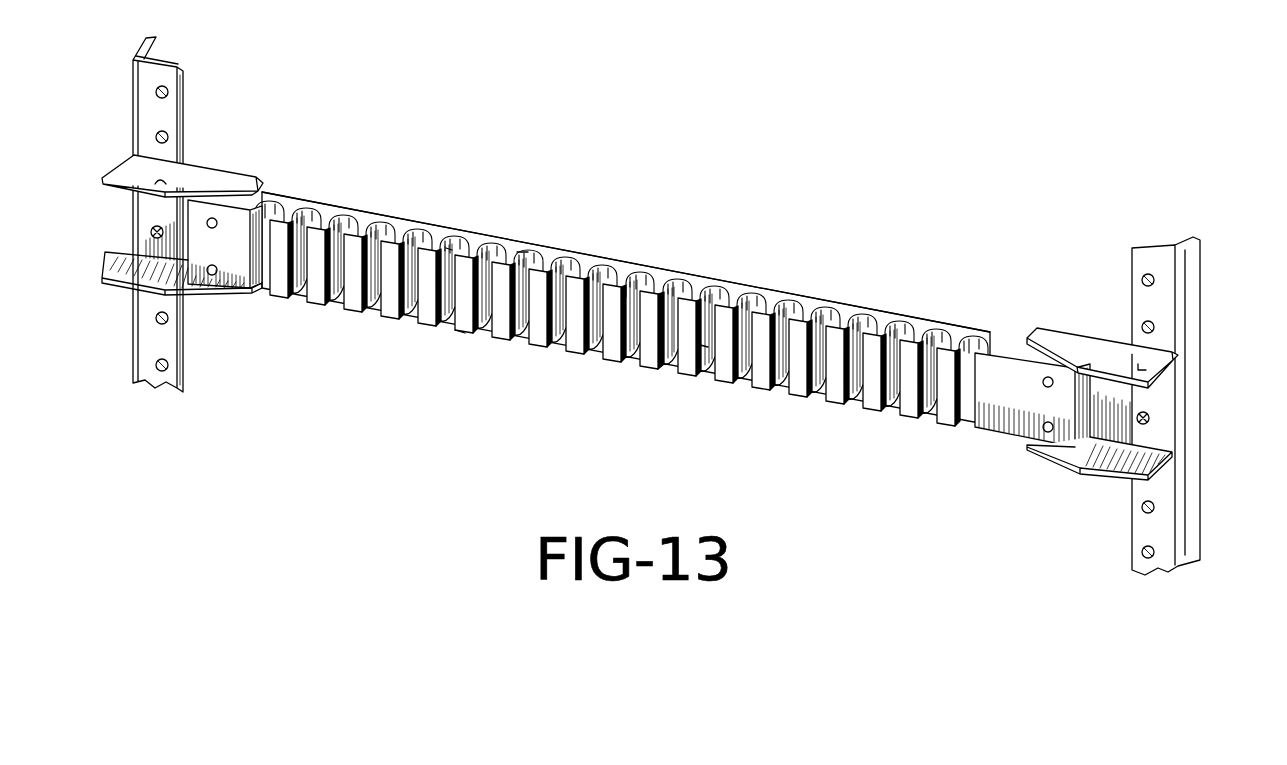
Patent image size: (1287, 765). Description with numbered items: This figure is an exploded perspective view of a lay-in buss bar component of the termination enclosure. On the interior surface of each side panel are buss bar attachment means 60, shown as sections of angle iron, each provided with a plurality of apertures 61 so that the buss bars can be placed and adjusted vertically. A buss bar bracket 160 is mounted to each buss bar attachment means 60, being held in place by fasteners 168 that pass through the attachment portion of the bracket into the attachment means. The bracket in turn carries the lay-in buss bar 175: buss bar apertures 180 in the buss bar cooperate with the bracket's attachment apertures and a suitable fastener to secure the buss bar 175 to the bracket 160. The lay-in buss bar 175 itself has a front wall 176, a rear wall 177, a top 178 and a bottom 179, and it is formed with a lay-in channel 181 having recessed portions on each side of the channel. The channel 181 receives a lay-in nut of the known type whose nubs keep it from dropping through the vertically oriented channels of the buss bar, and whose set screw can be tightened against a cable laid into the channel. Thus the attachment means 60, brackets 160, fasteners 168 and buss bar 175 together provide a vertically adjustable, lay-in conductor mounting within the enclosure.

The buss bar attachment means 60 is at (172, 82).
The mounting holes 61 is at (158, 95).
The buss bar bracket 160 is at (246, 176).
The fasteners 168 is at (150, 232).
The lay-in buss bar 175 is at (622, 278).
The front wall 176 is at (355, 286).
The rear wall 177 is at (731, 278).
The top 178 is at (512, 254).
The bottom 179 is at (462, 333).
The buss bar apertures 180 is at (212, 275).
The lay-in channel 181 is at (448, 247).